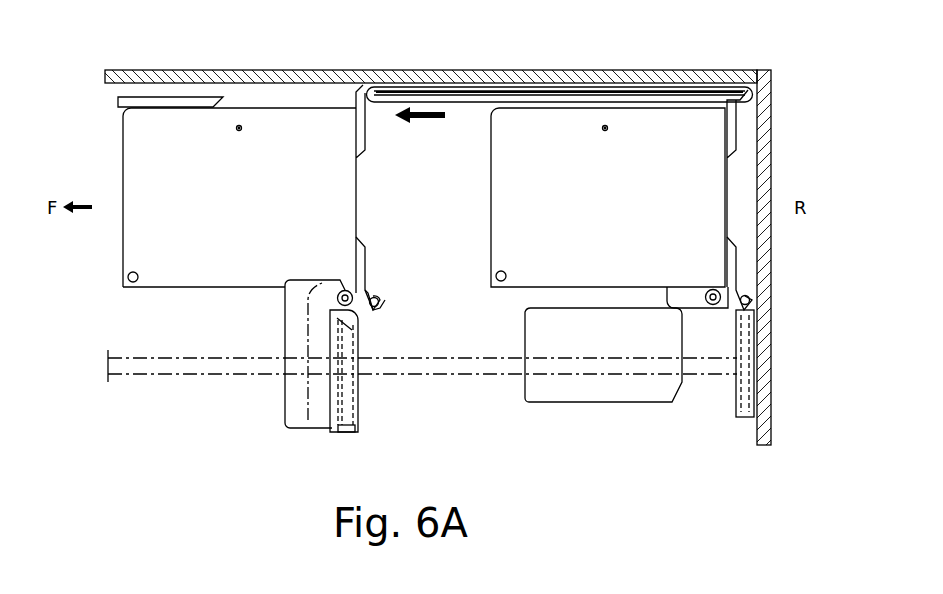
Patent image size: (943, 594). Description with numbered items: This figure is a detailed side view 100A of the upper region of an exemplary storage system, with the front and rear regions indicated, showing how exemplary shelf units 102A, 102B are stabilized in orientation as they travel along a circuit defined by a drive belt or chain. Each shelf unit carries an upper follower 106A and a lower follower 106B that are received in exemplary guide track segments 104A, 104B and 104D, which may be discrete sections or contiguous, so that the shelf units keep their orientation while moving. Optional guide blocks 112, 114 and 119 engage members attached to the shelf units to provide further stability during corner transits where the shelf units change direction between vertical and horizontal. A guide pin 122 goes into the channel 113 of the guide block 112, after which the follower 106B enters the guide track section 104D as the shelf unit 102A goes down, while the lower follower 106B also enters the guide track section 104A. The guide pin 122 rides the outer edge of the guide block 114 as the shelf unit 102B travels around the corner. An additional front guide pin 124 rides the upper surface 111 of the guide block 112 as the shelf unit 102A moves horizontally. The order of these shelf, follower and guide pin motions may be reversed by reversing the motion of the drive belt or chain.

The detailed side view of the upper region 100A is at (587, 413).
The shelf unit 102A is at (291, 232).
The shelf unit 102B is at (611, 232).
The guide track segment 104A is at (585, 92).
The guide track segment 104B is at (737, 405).
The guide track section 104D is at (357, 428).
The upper follower 106A is at (372, 102).
The lower follower 106B is at (381, 300).
The upper surface of guide block 111 is at (322, 282).
The guide block 112 is at (297, 411).
The channel 113 is at (318, 430).
The guide block 114 is at (548, 348).
The guide block 119 is at (186, 99).
The guide pin 122 is at (352, 306).
The front guide pin 124 is at (138, 275).